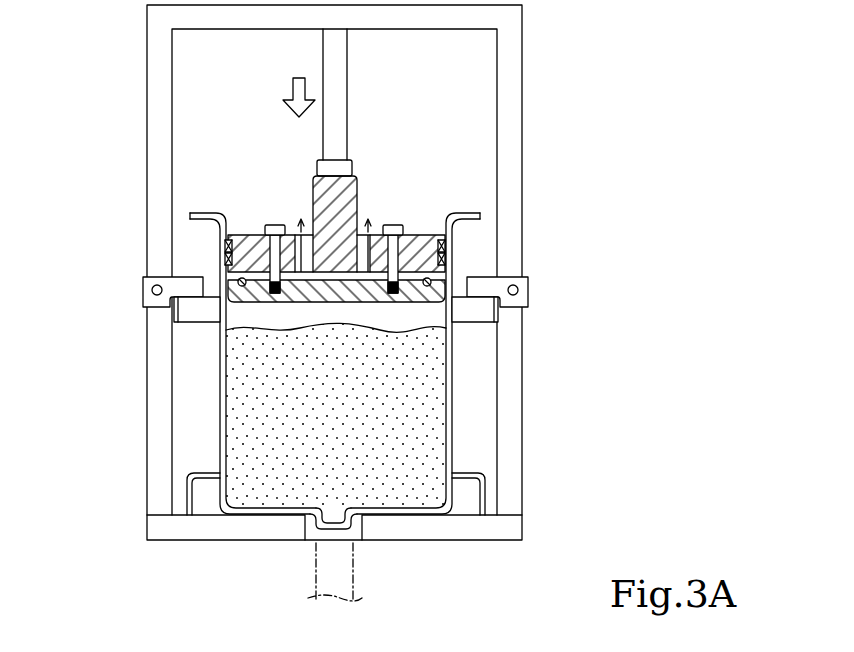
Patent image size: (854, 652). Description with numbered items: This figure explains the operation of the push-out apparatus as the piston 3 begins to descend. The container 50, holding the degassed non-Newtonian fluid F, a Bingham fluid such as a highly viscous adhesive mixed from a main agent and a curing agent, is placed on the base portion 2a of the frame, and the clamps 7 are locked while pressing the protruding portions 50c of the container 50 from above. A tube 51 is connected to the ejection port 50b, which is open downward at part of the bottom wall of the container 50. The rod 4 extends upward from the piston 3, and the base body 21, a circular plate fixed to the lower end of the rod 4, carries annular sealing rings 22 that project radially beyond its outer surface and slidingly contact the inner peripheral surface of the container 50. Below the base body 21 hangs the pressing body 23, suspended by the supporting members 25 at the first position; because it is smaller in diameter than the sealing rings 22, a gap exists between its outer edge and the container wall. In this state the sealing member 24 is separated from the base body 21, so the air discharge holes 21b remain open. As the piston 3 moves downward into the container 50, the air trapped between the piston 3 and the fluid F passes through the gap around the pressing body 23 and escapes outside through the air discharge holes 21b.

The base portion 2a is at (462, 512).
The rod 4 is at (342, 63).
The piston 3 is at (427, 233).
The container 50 is at (221, 428).
The ejection port 50b is at (317, 522).
The protruding portions 50c is at (193, 310).
The tube 51 is at (353, 558).
The non-Newtonian fluid F is at (447, 397).
The pressing body 23 is at (252, 318).
The sealing member 24 is at (241, 280).
The base body 21 is at (247, 232).
The air discharge holes 21b is at (289, 228).
The sealing rings 22 is at (450, 262).
The supporting members 25 is at (272, 222).
The clamps 7 is at (165, 277).